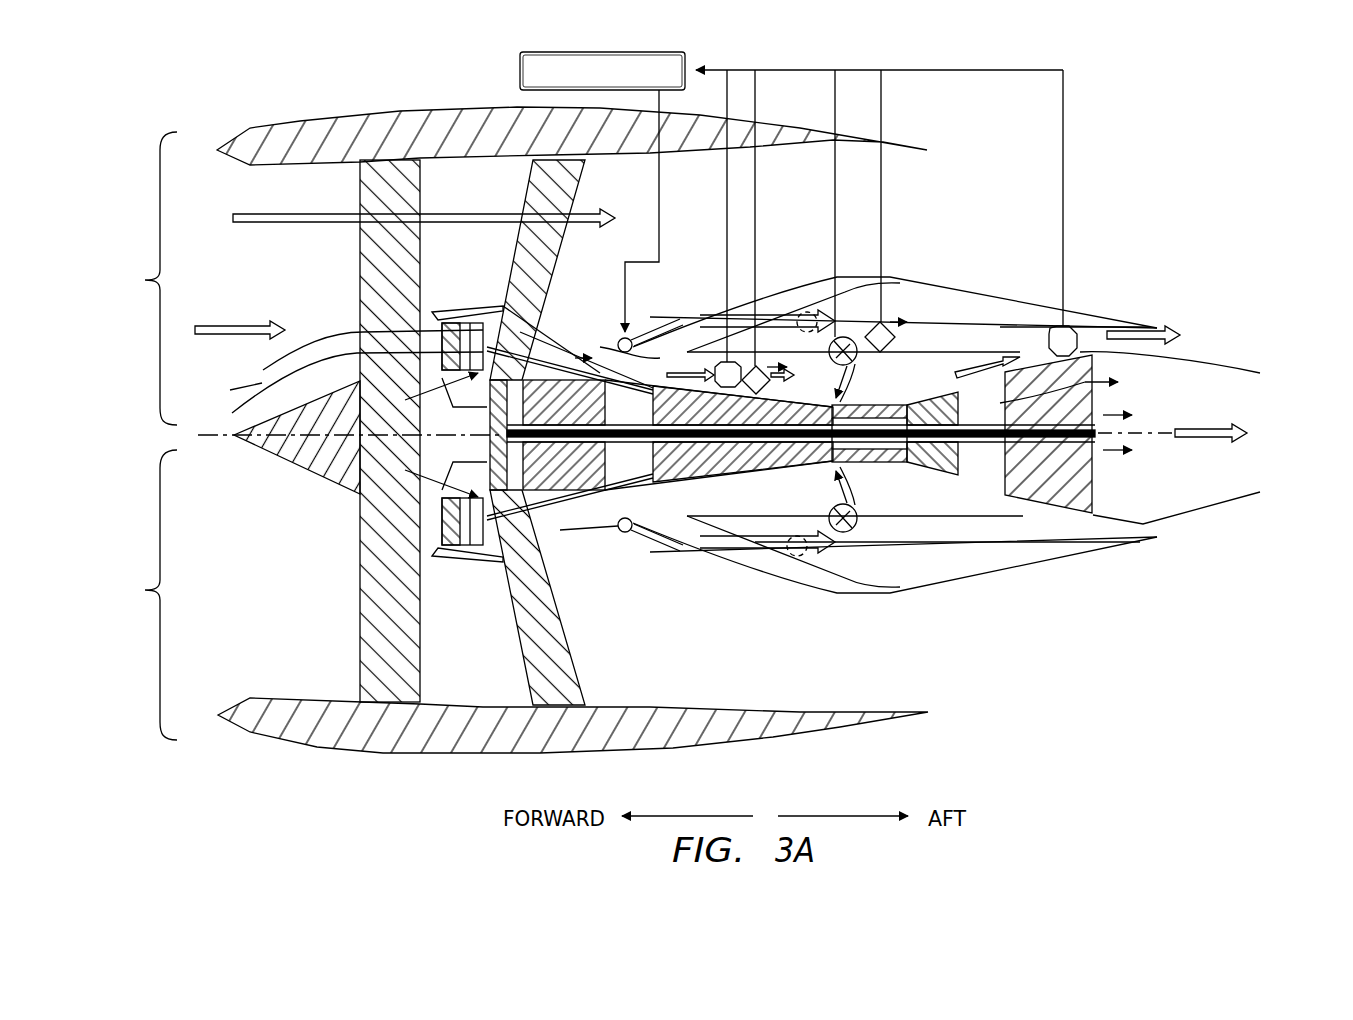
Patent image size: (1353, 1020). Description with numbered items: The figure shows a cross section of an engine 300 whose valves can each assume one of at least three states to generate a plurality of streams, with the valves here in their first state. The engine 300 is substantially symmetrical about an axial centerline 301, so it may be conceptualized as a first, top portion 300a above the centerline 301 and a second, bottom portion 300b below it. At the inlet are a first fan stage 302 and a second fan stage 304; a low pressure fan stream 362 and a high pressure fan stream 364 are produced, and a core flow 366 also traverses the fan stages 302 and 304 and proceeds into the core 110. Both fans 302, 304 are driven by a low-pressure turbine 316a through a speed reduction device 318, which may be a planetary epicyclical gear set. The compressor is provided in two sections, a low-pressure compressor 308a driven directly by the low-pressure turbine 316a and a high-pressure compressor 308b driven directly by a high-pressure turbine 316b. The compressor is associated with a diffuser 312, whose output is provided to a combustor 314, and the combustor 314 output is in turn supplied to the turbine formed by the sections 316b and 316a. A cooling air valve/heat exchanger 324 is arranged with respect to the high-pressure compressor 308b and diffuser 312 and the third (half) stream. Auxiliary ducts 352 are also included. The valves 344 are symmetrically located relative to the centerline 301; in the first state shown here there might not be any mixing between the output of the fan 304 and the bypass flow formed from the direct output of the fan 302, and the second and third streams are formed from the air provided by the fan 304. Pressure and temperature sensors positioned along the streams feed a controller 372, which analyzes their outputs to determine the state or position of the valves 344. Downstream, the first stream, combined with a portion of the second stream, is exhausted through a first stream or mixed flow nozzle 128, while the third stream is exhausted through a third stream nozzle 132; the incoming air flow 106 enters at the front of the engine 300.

The engine 300 is at (1225, 180).
The first, top portion 300a is at (127, 278).
The second, bottom portion 300b is at (127, 595).
The axial centerline 301 is at (213, 448).
The first fan stage 302 is at (362, 641).
The second fan stage 304 is at (485, 555).
The low-pressure compressor 308a is at (568, 495).
The high-pressure compressor 308b is at (733, 470).
The diffuser 312 is at (845, 405).
The combustor 314 is at (882, 480).
The low-pressure turbine 316a is at (1088, 462).
The high-pressure turbine 316b is at (950, 472).
The speed reduction device 318 is at (420, 490).
The cooling air valve/heat exchanger 324 is at (847, 337).
The valves 344 is at (620, 334).
The auxiliary ducts 352 is at (805, 311).
The low pressure fan stream 362 is at (248, 212).
The high pressure fan stream 364 is at (330, 342).
The core flow 366 is at (268, 382).
The controller 372 is at (518, 68).
The incoming airflow 106 is at (243, 322).
The core 110 is at (650, 500).
The first stream nozzle or mixed flow nozzle 128 is at (1250, 433).
The third stream nozzle 132 is at (1165, 326).